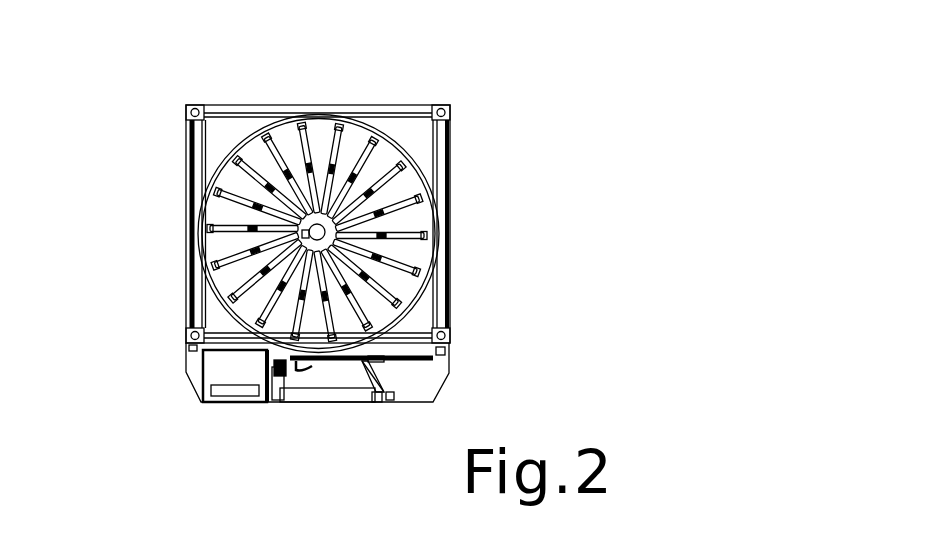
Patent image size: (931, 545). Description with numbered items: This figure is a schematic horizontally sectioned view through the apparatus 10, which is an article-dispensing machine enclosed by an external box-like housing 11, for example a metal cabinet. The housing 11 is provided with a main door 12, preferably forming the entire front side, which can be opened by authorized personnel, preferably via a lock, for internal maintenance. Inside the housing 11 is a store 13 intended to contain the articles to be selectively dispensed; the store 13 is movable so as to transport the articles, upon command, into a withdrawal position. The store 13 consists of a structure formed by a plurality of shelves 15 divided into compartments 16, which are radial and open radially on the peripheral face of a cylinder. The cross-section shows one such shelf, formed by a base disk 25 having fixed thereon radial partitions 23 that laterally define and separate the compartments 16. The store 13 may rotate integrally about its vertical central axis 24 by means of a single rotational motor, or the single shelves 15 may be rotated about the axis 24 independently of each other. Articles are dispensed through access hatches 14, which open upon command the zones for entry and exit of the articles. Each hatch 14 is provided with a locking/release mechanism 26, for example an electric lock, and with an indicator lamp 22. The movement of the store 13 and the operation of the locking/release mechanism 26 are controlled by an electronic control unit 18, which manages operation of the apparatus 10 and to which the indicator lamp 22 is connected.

The apparatus 10 is at (128, 85).
The housing 11 is at (196, 163).
The main door 12 is at (199, 400).
The store 13 is at (233, 131).
The access hatches 14 is at (336, 360).
The shelves 15 is at (401, 139).
The compartments 16 is at (400, 184).
The electronic control unit 18 is at (206, 373).
The indicator lamp 22 is at (290, 373).
The radial partitions 23 is at (413, 231).
The central axis 24 is at (310, 231).
The base disk 25 is at (312, 128).
The locking/release mechanism 26 is at (375, 373).